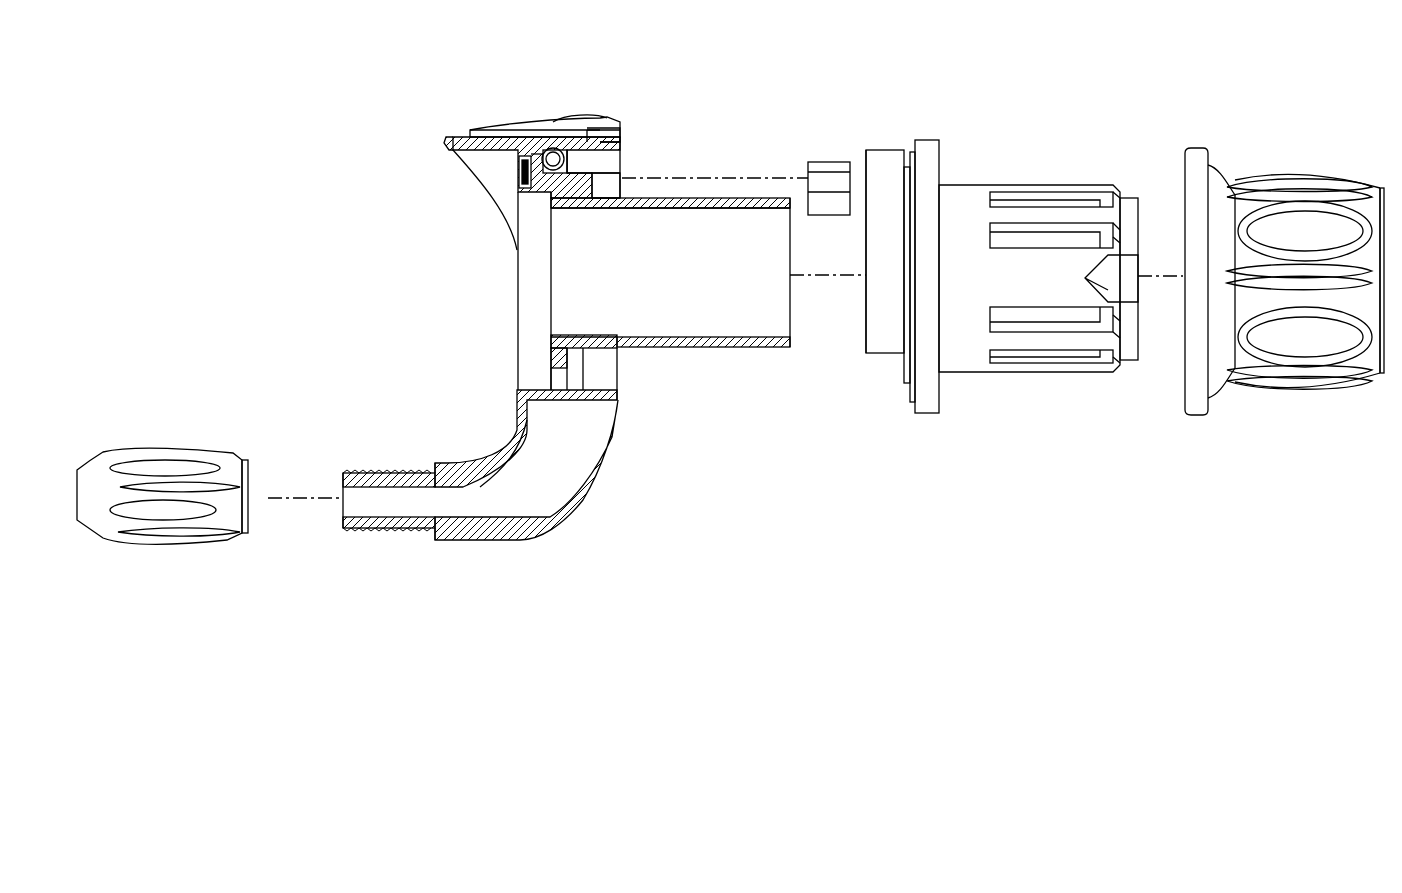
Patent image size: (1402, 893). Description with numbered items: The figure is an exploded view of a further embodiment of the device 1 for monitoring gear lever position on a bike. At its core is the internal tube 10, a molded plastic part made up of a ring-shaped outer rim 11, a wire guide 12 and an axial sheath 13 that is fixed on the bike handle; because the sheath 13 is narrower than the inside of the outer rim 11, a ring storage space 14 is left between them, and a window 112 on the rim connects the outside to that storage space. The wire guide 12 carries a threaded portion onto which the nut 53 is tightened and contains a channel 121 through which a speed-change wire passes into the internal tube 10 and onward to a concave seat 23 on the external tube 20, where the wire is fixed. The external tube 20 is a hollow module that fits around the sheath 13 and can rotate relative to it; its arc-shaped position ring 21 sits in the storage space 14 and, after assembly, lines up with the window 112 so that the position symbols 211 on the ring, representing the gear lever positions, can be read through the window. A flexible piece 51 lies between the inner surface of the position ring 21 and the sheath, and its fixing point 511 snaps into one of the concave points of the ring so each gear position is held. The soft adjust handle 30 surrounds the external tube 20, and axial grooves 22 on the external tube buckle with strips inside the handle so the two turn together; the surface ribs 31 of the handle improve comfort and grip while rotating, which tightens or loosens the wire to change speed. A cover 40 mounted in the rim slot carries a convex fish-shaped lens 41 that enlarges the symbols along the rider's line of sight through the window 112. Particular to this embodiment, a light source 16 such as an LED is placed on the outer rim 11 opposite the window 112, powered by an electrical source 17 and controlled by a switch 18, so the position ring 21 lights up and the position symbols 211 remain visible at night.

The device for monitoring gear lever position 1 is at (330, 145).
The internal tube 10 is at (714, 125).
The outer rim 11 is at (462, 136).
The window 112 is at (600, 131).
The wire guide 12 is at (415, 520).
The channel 121 is at (418, 495).
The axial sheath 13 is at (703, 200).
The ring storage space 14 is at (613, 184).
The light source 16 is at (613, 141).
The electrical source 17 is at (517, 182).
The switch 18 is at (563, 156).
The external tube 20 is at (1025, 135).
The position ring 21 is at (893, 163).
The position symbols 211 is at (886, 252).
The axial grooves 22 is at (1073, 237).
The concave seat 23 is at (1100, 290).
The adjust handle 30 is at (1322, 158).
The grip ribs 31 is at (1288, 384).
The cover 40 is at (510, 122).
The convex fish-shaped lens 41 is at (590, 117).
The flexible piece 51 is at (840, 180).
The fixing point 511 is at (813, 160).
The nut 53 is at (193, 540).